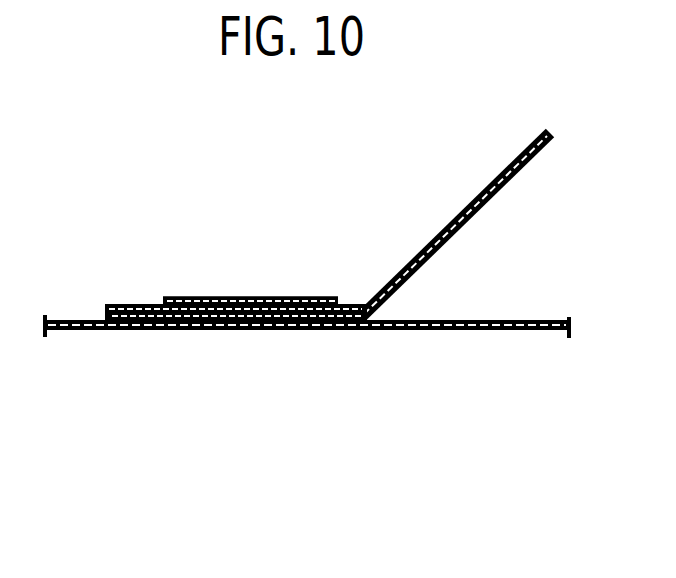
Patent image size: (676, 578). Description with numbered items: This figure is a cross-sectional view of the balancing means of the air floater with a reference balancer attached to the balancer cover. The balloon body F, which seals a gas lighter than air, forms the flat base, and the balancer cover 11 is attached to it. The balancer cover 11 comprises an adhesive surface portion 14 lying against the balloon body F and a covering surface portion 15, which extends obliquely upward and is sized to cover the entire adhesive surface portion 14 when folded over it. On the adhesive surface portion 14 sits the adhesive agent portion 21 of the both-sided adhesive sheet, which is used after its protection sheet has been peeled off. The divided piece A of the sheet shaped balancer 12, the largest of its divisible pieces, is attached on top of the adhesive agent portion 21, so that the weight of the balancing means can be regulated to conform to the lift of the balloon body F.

The balancer cover 11 is at (454, 220).
The covering surface portion 15 is at (471, 205).
The sheet shaped balancer 12 is at (236, 301).
The adhesive agent portion 21 is at (208, 332).
The adhesive surface portion 14 is at (282, 332).
The divided piece A is at (226, 296).
The balloon body F is at (415, 332).